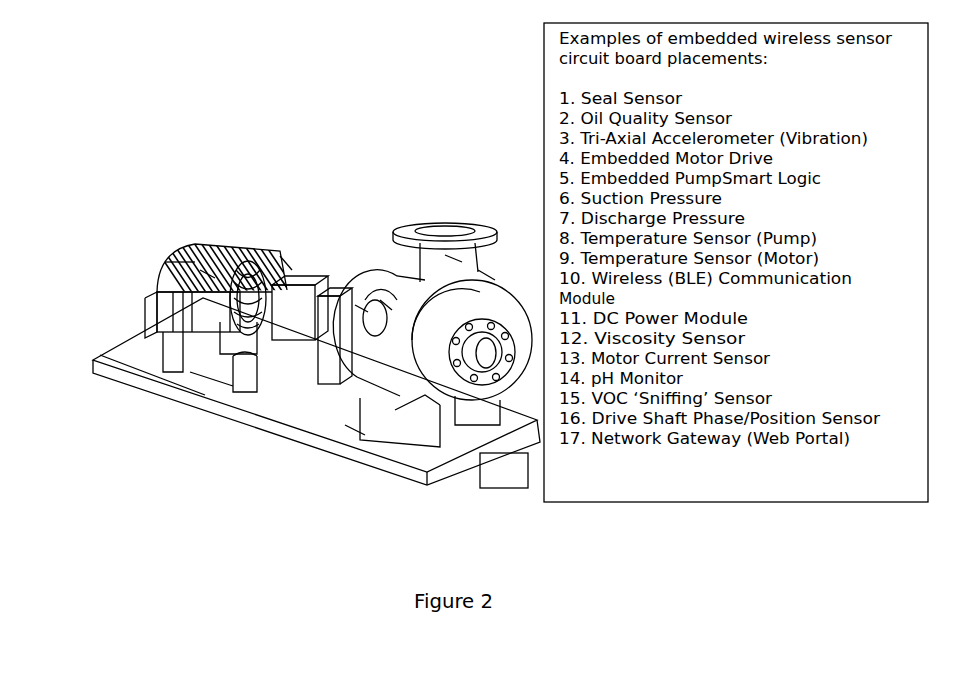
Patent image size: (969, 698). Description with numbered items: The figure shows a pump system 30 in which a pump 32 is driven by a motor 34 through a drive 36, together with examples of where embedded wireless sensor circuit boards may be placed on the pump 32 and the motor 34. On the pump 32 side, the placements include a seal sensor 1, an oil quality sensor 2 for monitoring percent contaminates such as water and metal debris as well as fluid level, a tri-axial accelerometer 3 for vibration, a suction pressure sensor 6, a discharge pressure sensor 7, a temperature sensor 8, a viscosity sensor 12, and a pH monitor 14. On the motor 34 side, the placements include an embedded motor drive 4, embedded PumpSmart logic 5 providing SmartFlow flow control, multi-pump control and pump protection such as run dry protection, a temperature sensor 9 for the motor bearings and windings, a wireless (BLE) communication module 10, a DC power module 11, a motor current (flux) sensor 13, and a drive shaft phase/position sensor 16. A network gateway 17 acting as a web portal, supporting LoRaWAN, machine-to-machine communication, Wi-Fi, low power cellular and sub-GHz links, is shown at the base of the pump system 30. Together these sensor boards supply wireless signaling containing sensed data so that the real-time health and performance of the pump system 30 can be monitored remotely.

The seal sensor 1 is at (345, 425).
The oil quality sensor 2 is at (340, 297).
The tri-axial accelerometer 3 is at (360, 307).
The embedded motor drive 4 is at (187, 257).
The embedded PumpSmart logic 5 is at (180, 258).
The suction pressure sensor 6 is at (392, 425).
The discharge pressure sensor 7 is at (438, 228).
The temperature sensor 8 is at (382, 303).
The temperature sensor 9 is at (203, 247).
The wireless (BLE) communication module 10 is at (207, 352).
The DC power module 11 is at (219, 368).
The viscosity sensor 12 is at (457, 260).
The motor current (flux) sensor 13 is at (200, 274).
The pH monitor 14 is at (483, 267).
The drive shaft phase/position sensor 16 is at (287, 259).
The network gateway 17 is at (516, 436).
The pump system 30 is at (108, 173).
The pump 32 is at (400, 377).
The motor 34 is at (212, 305).
The drive 36 is at (322, 335).